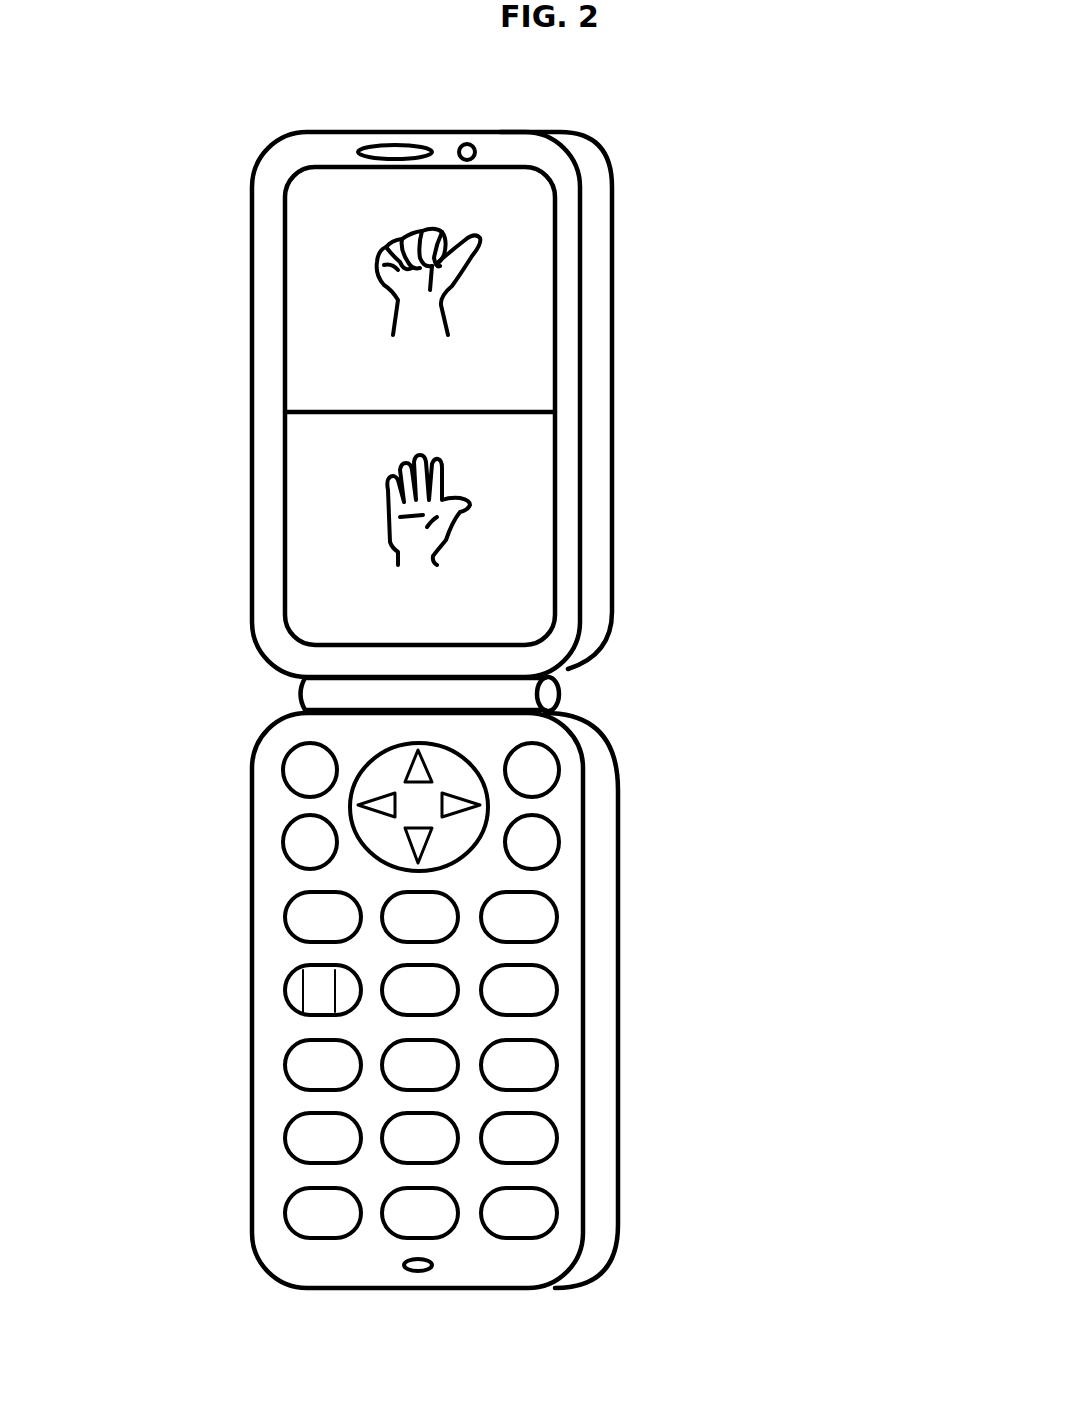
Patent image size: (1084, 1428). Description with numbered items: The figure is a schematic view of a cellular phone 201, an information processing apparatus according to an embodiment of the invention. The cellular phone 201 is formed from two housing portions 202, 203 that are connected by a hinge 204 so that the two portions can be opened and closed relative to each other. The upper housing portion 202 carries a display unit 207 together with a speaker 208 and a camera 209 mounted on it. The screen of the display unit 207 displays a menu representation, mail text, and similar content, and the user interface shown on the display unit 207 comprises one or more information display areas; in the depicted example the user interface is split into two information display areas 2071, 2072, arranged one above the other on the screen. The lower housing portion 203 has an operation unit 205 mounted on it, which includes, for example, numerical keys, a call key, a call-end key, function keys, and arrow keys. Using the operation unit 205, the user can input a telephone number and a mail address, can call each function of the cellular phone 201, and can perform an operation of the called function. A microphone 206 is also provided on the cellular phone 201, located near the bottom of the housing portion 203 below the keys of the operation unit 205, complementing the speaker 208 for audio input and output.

The cellular phone 201 is at (780, 130).
The housing portion 202 is at (252, 372).
The housing portion 203 is at (252, 983).
The hinge 204 is at (548, 690).
The operation unit 205 is at (632, 740).
The microphone 206 is at (428, 1263).
The display unit 207 is at (630, 150).
The speaker 208 is at (380, 150).
The camera 209 is at (475, 147).
The information display area 2071 is at (320, 285).
The information display area 2072 is at (310, 508).